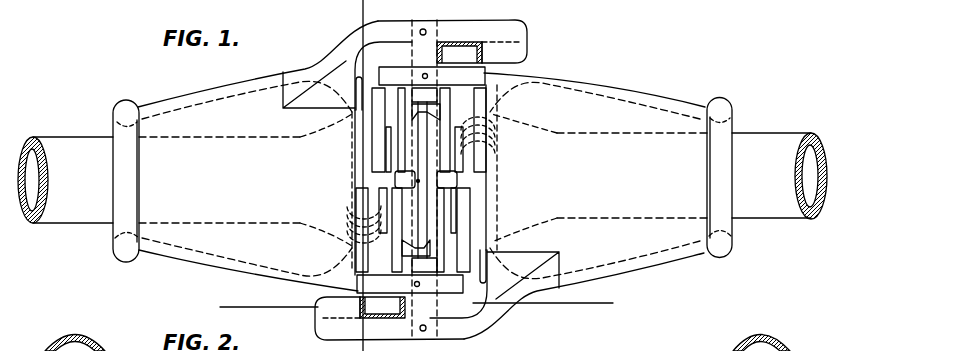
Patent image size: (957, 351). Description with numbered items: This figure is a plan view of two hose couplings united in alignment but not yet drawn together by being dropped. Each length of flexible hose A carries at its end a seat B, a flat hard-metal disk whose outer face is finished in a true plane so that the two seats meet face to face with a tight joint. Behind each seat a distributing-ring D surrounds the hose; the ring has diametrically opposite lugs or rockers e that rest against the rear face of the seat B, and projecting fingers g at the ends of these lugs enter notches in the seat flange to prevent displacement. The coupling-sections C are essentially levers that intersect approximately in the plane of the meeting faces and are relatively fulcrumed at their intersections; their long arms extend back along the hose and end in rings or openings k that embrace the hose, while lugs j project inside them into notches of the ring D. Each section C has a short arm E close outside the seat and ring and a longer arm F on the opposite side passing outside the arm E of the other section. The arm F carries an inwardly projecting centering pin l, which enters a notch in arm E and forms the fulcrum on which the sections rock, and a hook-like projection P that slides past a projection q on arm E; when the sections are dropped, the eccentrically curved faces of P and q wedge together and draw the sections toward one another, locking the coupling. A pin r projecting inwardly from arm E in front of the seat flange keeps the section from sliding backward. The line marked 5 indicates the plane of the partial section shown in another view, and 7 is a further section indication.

The section of flexible hose A is at (422, 178).
The coupling-section C is at (421, 180).
The distributing-ring D is at (372, 163).
The short arm E is at (421, 180).
The longer arm F is at (421, 178).
The projection P is at (421, 181).
The seat B is at (423, 180).
The lug or rocker e is at (498, 178).
The projecting finger g is at (424, 171).
The lug j is at (353, 102).
The ring or opening k is at (113, 128).
The centering or guiding pin l is at (424, 180).
The projection q is at (421, 179).
The pin r is at (415, 76).
The section line 5 5 is at (416, 307).
The section line 7- 7 is at (357, 175).